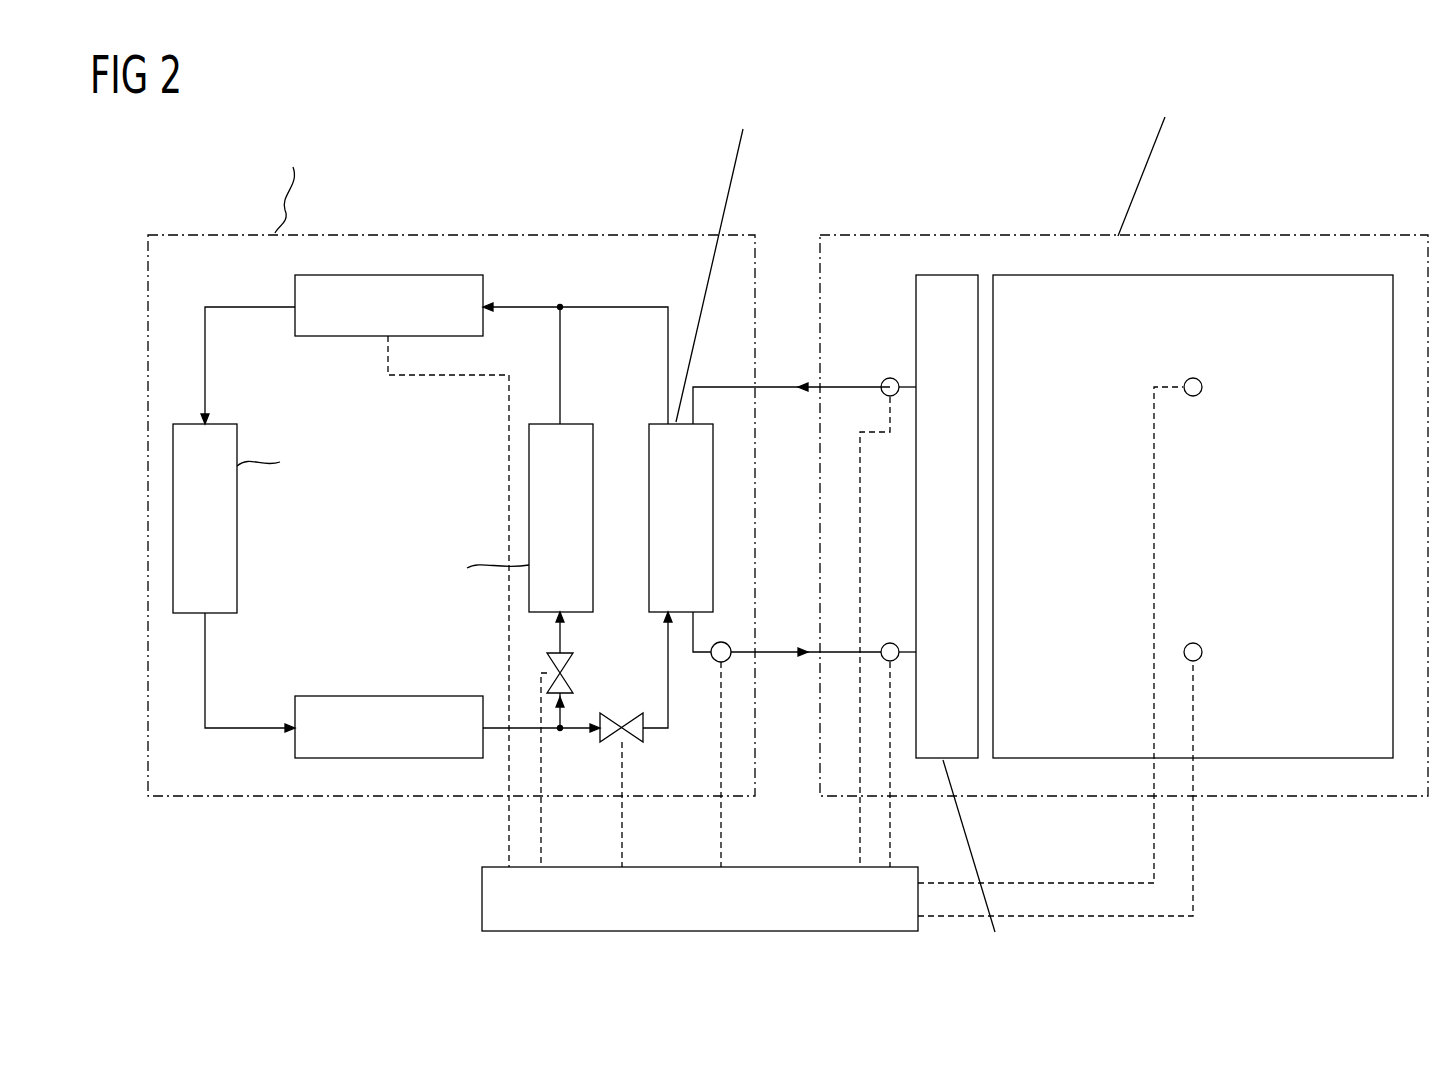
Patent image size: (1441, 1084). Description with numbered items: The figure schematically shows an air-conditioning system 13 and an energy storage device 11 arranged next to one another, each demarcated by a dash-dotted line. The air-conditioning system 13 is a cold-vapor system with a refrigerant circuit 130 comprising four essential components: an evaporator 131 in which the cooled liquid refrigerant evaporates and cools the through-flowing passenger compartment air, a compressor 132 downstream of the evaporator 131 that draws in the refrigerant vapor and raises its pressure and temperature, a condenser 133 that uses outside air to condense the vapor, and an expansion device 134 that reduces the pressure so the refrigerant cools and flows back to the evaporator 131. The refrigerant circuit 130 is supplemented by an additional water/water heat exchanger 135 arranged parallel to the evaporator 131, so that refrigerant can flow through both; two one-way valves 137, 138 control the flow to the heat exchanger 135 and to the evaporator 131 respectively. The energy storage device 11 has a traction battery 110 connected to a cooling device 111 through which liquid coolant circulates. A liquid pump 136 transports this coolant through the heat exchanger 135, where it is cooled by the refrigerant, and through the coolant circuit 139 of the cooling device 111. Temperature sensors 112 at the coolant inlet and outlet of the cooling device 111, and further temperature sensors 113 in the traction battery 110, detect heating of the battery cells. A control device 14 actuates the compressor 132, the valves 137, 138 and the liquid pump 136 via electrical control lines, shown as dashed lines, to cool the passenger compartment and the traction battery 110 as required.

The energy storage device 11 is at (1040, 236).
The air-conditioning system 13 is at (556, 236).
The control device 14 is at (482, 897).
The traction battery 110 is at (1203, 275).
The cooling device 111 is at (946, 275).
The temperature sensors 112 is at (889, 378).
The further temperature sensors 113 is at (1202, 387).
The refrigerant circuit 130 is at (614, 258).
The evaporator 131 is at (550, 424).
The compressor 132 is at (324, 337).
The condenser 133 is at (237, 521).
The expansion device 134 is at (325, 696).
The additional heat exchanger 135 is at (658, 424).
The liquid pump 136 is at (715, 661).
The one-way valve 137 is at (620, 713).
The one-way valve 138 is at (563, 670).
The coolant circuit 139 is at (775, 376).